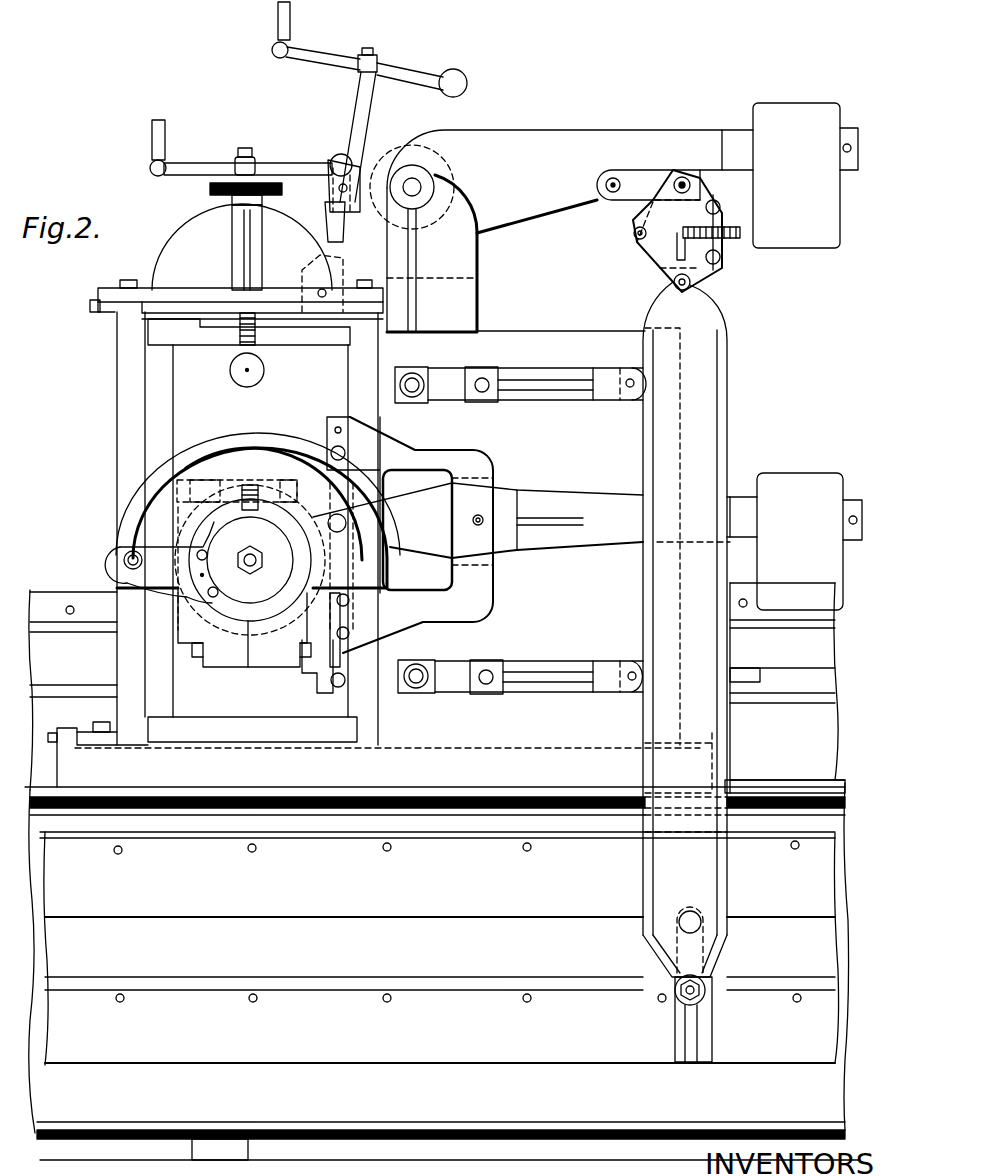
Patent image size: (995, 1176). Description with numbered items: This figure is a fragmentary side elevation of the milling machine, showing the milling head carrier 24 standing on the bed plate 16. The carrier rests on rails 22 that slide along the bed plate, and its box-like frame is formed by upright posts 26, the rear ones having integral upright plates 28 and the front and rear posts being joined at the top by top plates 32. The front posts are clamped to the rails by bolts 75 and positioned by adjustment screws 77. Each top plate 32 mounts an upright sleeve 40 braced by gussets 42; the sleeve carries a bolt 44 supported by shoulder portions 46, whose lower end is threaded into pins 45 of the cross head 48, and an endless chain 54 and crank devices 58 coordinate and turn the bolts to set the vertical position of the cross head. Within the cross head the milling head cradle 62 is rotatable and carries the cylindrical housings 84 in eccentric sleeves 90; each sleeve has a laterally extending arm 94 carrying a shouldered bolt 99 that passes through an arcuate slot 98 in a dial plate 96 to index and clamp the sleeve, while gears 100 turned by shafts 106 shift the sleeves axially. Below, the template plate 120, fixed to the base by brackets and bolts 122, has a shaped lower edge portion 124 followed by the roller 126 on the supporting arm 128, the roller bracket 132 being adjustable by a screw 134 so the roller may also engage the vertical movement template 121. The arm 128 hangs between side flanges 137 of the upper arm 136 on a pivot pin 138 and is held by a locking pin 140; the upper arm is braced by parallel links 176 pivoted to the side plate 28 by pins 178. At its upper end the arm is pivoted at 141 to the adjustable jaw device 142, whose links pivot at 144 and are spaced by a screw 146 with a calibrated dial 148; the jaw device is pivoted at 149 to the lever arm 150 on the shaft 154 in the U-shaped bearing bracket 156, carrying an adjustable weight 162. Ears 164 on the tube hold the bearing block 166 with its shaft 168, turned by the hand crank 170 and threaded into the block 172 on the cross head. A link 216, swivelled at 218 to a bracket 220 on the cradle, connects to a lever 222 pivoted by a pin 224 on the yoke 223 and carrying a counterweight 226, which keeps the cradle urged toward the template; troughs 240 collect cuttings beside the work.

The bed plate 16 is at (335, 792).
The rails 22 is at (432, 940).
The milling head carrier 24 is at (128, 370).
The upright posts 26 is at (126, 398).
The upright plates 28 is at (520, 330).
The top plates 32 is at (203, 296).
The upright sleeve 40 is at (259, 238).
The gussets 42 is at (232, 238).
The bolts 44 is at (262, 338).
The pins 45 is at (246, 370).
The shoulder portions 46 is at (212, 190).
The cross head 48 is at (198, 511).
The endless chain 54 is at (268, 158).
The crank devices 58 is at (166, 128).
The milling head cradle 62 is at (230, 648).
The bolts 75 is at (127, 282).
The adjustment screws 77 is at (92, 304).
The cylindrical housings 84 is at (250, 559).
The eccentric sleeves 90 is at (263, 615).
The laterally extending arm 94 is at (200, 545).
The dial plate 96 is at (137, 495).
The arcuate slots 98 is at (140, 512).
The shouldered bolts 99 is at (124, 560).
The gears 100 is at (248, 483).
The shafts 106 is at (272, 490).
The template plate 120 is at (333, 918).
The vertical movement template 121 is at (336, 1066).
The brackets and bolts 122 is at (249, 851).
The lower edge portion 124 is at (458, 918).
The roller 126 is at (684, 927).
The supporting arm 128 is at (680, 868).
The bracket 132 is at (675, 1027).
The screw 134 is at (761, 1025).
The upper arm 136 is at (710, 352).
The side flanges 137 is at (646, 465).
The pivot pin 138 is at (648, 513).
The locking pin 140 is at (758, 670).
The pivotal connection 141 is at (677, 283).
The adjustable jaw device 142 is at (642, 253).
The pivotal connection 144 is at (634, 234).
The screw 146 is at (719, 250).
The calibrated dial 148 is at (741, 233).
The pivotal connection 149 is at (681, 182).
The lever arm 150 is at (554, 165).
The shaft 154 is at (416, 186).
The U-shaped bearing bracket 156 is at (460, 248).
The adjustable weights 162 is at (790, 175).
The ears 164 is at (367, 163).
The bearing block 166 is at (353, 230).
The shaft 168 is at (356, 97).
The hand crank 170 is at (289, 20).
The block 172 is at (320, 270).
The parallel links 176 is at (548, 378).
The pins 178 is at (412, 378).
The link 216 is at (348, 605).
The swivel connection 218 is at (343, 684).
The bracket 220 is at (316, 688).
The lever 222 is at (540, 545).
The yoke 223 is at (450, 456).
The pin 224 is at (480, 517).
The counterweight 226 is at (806, 470).
The troughs 240 is at (745, 757).